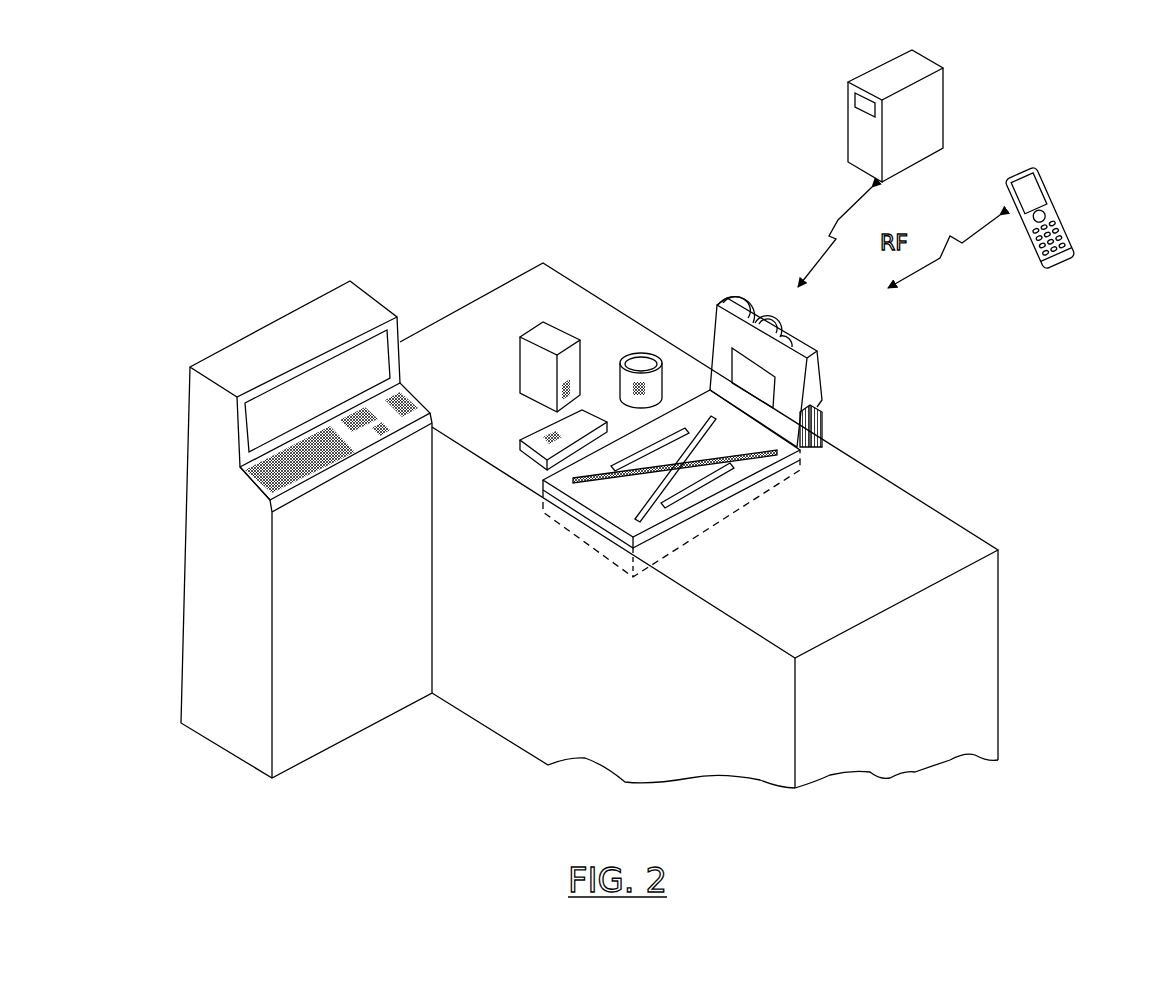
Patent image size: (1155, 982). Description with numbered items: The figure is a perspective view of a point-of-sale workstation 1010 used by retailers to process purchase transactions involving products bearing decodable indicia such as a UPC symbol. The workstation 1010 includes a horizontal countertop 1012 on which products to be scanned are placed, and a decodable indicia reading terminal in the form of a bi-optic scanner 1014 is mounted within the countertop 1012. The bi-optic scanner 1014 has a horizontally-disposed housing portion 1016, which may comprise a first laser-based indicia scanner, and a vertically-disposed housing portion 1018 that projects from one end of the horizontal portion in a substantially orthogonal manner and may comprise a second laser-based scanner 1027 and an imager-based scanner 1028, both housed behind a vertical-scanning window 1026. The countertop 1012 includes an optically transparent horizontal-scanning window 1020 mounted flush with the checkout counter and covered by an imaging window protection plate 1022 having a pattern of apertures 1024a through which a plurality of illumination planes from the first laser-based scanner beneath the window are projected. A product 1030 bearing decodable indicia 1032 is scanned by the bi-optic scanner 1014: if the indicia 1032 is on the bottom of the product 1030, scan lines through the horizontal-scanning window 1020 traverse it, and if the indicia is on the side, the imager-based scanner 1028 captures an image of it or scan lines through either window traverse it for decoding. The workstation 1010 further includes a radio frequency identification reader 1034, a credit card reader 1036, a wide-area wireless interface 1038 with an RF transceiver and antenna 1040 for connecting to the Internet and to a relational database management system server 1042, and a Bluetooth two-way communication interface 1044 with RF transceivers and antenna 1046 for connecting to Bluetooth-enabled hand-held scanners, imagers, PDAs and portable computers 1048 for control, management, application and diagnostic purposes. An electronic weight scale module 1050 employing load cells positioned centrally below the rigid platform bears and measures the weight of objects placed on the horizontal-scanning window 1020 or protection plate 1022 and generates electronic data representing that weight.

The point-of-sale workstation 1010 is at (763, 93).
The horizontal countertop 1012 is at (837, 615).
The bi-optic scanner 1014 is at (837, 330).
The horizontally-disposed housing portion 1016 is at (645, 490).
The vertically-disposed housing portion 1018 is at (713, 335).
The horizontal-scanning window 1020 is at (660, 573).
The imaging window protection plate 1022 is at (600, 502).
The apertures 1024a is at (707, 487).
The vertical-scanning window 1026 is at (893, 381).
The second laser-based scanner 1027 is at (893, 381).
The imager-based scanner 1028 is at (760, 387).
The product 1030 is at (503, 307).
The decodable indicia 1032 is at (555, 388).
The radio frequency identification (RFID) reader 1034 is at (723, 298).
The credit card reader 1036 is at (823, 427).
The wide-area wireless (WIFI) interface 1038 is at (845, 218).
The RF transceiver and antenna 1040 is at (768, 322).
The relational database management system (RDBMS) server 1042 is at (933, 123).
The Bluetooth 2-way communication interface 1044 is at (962, 243).
The RF transceivers and antenna 1046 is at (791, 325).
The Bluetooth-enabled hand-held devices 1048 is at (1042, 180).
The electronic weight scale module 1050 is at (780, 490).